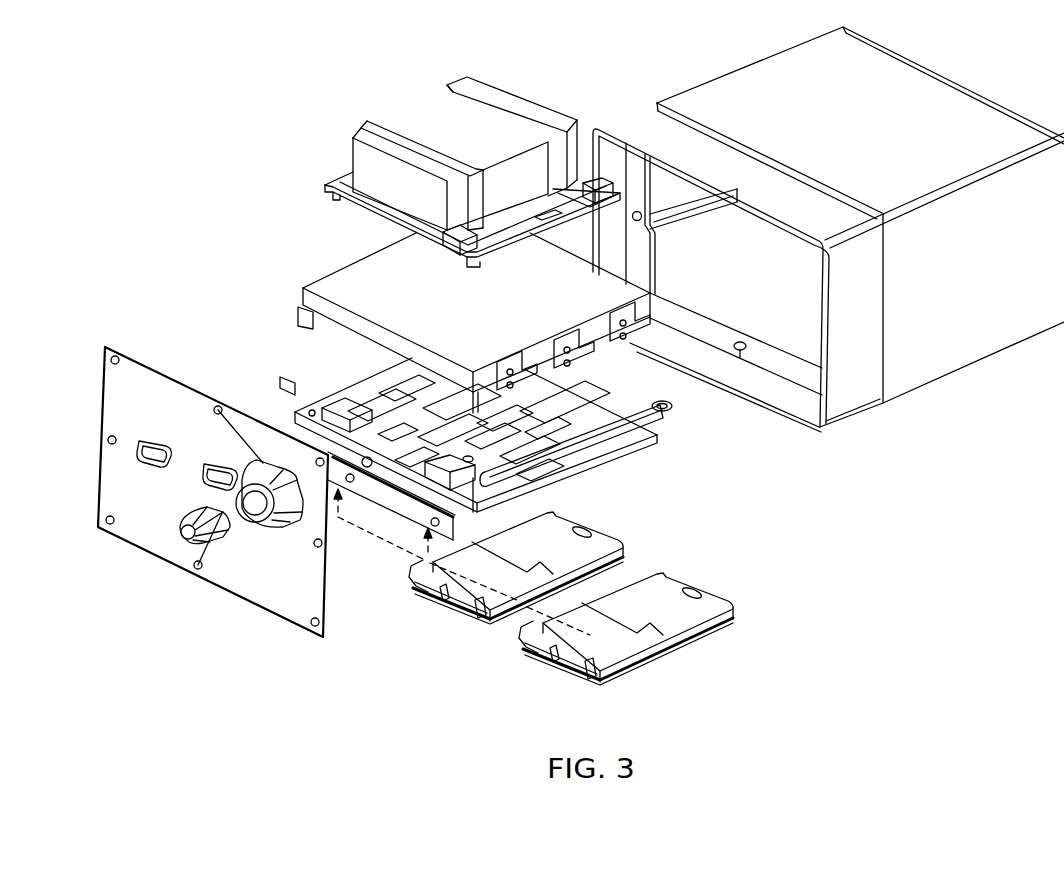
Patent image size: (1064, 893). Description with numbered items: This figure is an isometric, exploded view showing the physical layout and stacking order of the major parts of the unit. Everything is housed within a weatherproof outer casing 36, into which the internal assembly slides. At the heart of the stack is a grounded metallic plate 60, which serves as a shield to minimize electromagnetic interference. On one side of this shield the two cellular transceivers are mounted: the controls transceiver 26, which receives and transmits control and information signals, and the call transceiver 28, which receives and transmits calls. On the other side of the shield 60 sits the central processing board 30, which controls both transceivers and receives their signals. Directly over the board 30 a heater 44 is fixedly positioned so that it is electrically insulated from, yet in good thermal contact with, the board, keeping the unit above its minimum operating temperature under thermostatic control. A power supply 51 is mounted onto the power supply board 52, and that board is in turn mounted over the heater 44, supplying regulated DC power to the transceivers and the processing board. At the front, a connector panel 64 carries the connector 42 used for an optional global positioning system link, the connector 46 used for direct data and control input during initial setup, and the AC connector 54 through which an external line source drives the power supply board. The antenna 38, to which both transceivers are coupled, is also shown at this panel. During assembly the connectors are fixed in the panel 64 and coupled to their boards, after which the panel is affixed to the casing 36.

The controls transceiver 26 is at (607, 537).
The call transceiver 28 is at (718, 593).
The central processing board 30 is at (617, 398).
The outer casing 36 is at (1013, 345).
The antenna 38 is at (252, 527).
The connector 42 is at (223, 465).
The heater 44 is at (337, 293).
The connector 46 is at (150, 463).
The power supply 51 is at (430, 108).
The power supply board 52 is at (333, 175).
The AC connector 54 is at (180, 548).
The grounded metallic plate 60 is at (460, 521).
The connector panel 64 is at (303, 630).